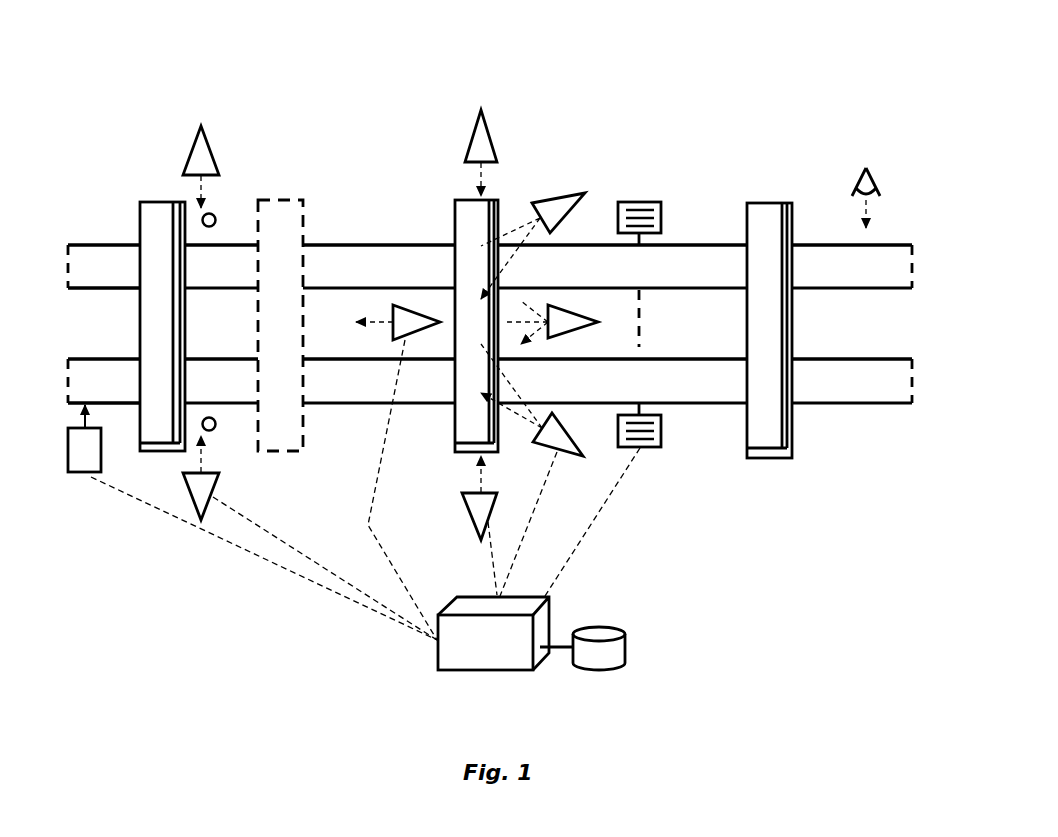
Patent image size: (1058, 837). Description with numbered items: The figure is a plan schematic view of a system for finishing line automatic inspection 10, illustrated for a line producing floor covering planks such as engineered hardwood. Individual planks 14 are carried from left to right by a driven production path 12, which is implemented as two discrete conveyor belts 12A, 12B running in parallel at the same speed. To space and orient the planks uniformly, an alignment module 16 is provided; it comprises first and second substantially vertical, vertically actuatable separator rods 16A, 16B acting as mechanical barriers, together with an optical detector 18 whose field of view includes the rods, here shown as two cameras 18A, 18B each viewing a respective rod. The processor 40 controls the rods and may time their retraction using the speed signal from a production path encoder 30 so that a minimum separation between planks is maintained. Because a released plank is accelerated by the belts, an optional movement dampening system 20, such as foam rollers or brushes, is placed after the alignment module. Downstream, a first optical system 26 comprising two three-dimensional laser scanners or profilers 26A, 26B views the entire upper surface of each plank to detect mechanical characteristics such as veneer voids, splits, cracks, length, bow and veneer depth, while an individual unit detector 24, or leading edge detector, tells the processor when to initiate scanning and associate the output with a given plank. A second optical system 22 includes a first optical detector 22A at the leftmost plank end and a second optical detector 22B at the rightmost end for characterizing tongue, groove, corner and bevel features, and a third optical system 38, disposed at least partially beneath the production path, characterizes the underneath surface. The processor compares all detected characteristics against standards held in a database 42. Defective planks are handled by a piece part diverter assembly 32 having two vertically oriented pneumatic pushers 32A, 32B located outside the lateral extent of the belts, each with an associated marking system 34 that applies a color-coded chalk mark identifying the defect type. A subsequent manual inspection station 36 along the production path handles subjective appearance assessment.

The system for finishing line automatic inspection 10 is at (116, 44).
The driven production path 12 is at (912, 324).
The first belt 12A is at (105, 245).
The second belt 12B is at (107, 359).
The planks 14 is at (157, 203).
The alignment module 16 is at (286, 148).
The first separator rod 16A is at (215, 216).
The second separator rod 16B is at (204, 428).
The optical detector 18 is at (236, 92).
The first camera 18A is at (205, 150).
The second camera 18B is at (189, 493).
The movement dampening system 20 is at (303, 214).
The second optical system 22 is at (527, 90).
The first optical detector 22A is at (490, 140).
The second optical detector 22B is at (462, 500).
The individual unit detector 24 is at (400, 305).
The first optical system 26 is at (562, 142).
The first 3-D laser scanner 26A is at (582, 194).
The second 3-D laser scanner 26B is at (550, 452).
The production path encoder 30 is at (78, 473).
The piece part diverter assembly 32 is at (697, 144).
The first pneumatic pusher 32A is at (641, 203).
The second pneumatic pusher 32B is at (650, 447).
The marking system 34 is at (661, 220).
The manual inspection station 36 is at (883, 160).
The third optical system 38 is at (573, 306).
The processor 40 is at (438, 650).
The database 42 is at (617, 630).